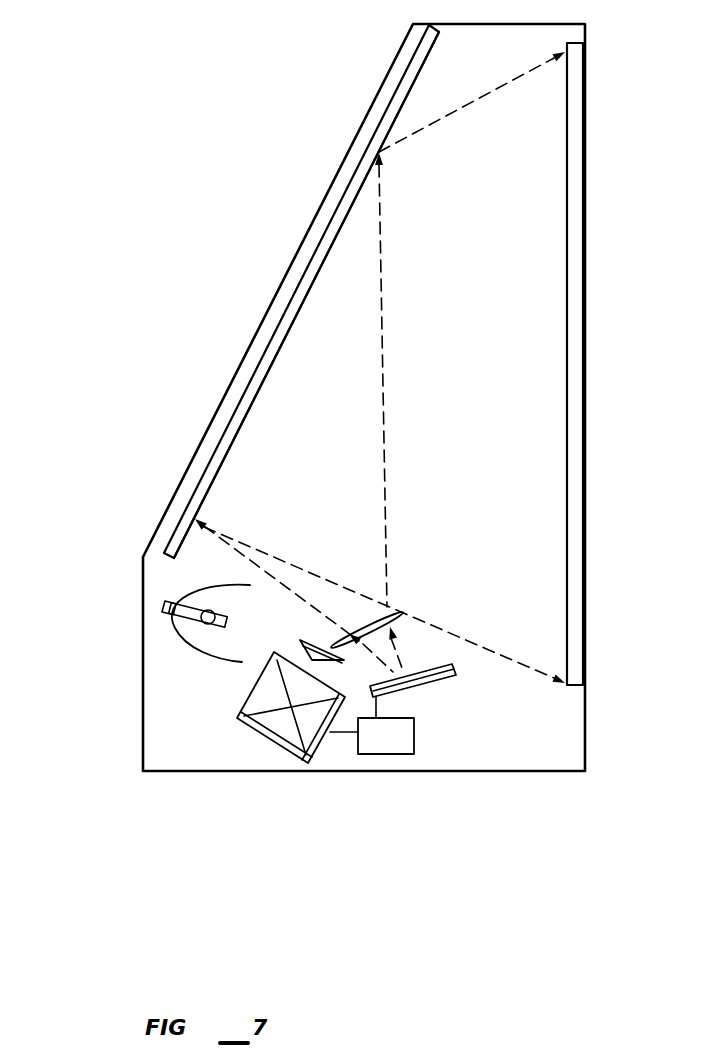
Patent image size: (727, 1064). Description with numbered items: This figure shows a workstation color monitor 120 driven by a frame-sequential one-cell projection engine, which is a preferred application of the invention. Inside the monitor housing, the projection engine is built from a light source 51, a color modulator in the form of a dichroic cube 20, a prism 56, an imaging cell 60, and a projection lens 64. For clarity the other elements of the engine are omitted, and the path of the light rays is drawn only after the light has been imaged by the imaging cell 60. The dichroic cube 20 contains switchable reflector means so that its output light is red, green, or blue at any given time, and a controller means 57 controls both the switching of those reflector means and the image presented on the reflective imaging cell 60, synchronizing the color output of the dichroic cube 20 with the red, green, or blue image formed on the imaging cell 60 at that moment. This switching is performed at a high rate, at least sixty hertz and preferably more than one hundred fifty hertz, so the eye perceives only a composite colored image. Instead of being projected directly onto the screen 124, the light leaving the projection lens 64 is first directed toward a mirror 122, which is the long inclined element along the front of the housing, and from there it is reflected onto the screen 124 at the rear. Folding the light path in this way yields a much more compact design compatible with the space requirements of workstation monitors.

The workstation color monitor 120 is at (238, 278).
The mirror 122 is at (245, 423).
The screen 124 is at (595, 443).
The light source 51 is at (163, 641).
The prism 56 is at (302, 642).
The projection lens 64 is at (402, 622).
The imaging cell 60 is at (432, 690).
The controller means 57 is at (390, 757).
The dichroic cube 20 is at (285, 737).